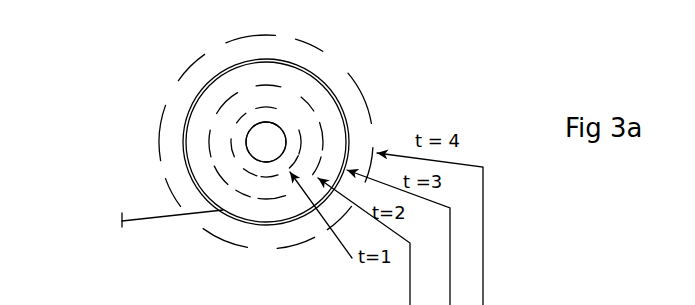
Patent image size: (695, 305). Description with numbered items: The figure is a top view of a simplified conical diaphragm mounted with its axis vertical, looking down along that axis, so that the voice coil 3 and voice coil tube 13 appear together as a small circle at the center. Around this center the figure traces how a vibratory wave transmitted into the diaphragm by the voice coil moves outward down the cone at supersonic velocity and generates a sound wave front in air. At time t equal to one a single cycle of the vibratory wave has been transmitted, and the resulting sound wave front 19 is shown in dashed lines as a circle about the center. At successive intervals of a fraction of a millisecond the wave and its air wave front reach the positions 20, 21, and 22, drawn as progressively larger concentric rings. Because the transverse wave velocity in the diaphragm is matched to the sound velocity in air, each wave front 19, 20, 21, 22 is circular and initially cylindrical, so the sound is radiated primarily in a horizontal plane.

The voice coil 3 is at (247, 135).
The voice coil tube 13 is at (161, 115).
The sound wave front at time t equal to 1 19 is at (301, 124).
The first successive position of the vibratory wave and wave front 20 is at (258, 74).
The second successive position of the vibratory wave and wave front 21 is at (284, 60).
The third successive position of the vibratory wave and wave front 22 is at (328, 51).